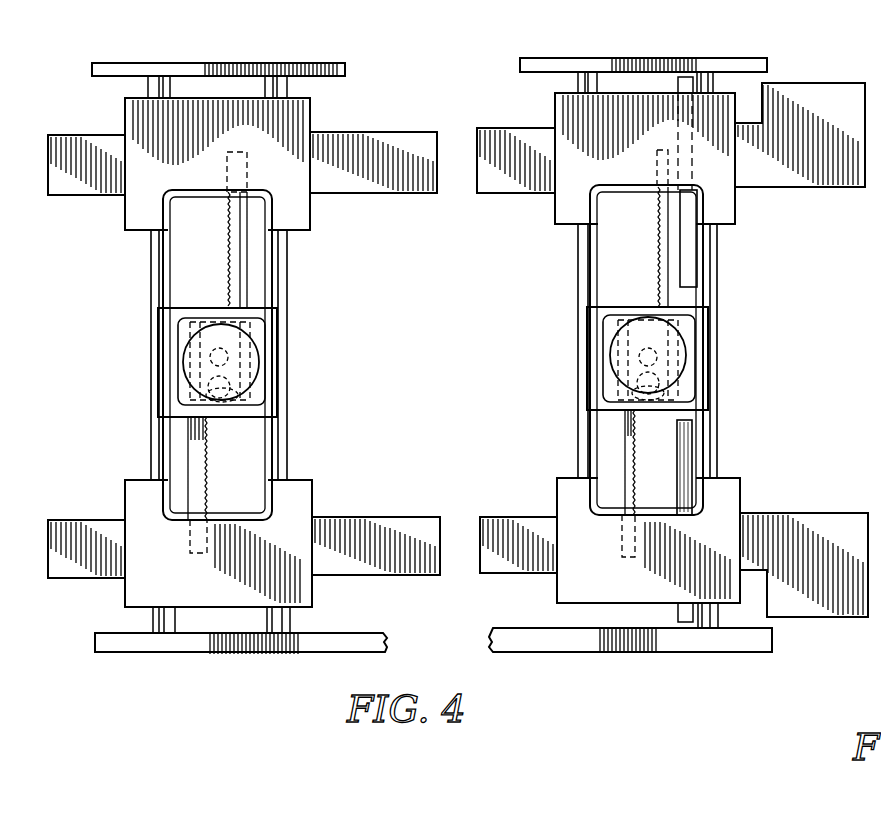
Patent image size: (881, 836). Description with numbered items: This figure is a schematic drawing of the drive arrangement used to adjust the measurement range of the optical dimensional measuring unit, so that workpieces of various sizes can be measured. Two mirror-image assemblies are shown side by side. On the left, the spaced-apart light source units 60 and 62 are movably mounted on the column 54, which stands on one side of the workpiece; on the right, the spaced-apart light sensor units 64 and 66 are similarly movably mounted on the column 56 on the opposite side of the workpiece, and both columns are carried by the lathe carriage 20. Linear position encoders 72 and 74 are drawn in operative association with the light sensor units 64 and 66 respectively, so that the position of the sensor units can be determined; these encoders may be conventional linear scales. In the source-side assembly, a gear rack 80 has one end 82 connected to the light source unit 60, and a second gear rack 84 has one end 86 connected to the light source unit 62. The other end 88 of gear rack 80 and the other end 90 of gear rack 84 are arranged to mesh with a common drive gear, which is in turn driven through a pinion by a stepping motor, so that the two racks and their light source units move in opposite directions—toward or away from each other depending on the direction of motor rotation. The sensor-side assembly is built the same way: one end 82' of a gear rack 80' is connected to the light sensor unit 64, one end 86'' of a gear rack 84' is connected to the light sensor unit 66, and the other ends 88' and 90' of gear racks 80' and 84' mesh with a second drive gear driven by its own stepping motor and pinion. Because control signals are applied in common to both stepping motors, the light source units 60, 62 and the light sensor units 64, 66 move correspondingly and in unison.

The longitudinal slide or carriage 20 is at (432, 370).
The column 54 is at (194, 355).
The column 56 is at (671, 351).
The light source unit 60 is at (373, 144).
The light source unit 62 is at (376, 527).
The light sensor unit 64 is at (516, 143).
The light sensor unit 66 is at (518, 526).
The linear position encoder 72 is at (720, 349).
The linear position encoder 74 is at (667, 467).
The gear rack 80 is at (218, 250).
The gear rack 80' is at (639, 247).
The end of gear rack 82 is at (212, 172).
The end of gear rack 82' is at (644, 150).
The gear rack 84 is at (219, 468).
The gear rack 84' is at (652, 462).
The end of gear rack 86 is at (180, 552).
The end of gear rack 86'' is at (605, 547).
The other end of gear rack 88 is at (270, 391).
The other end of gear rack 88' is at (700, 384).
The other end of gear rack 90 is at (217, 347).
The other end of gear rack 90' is at (620, 358).